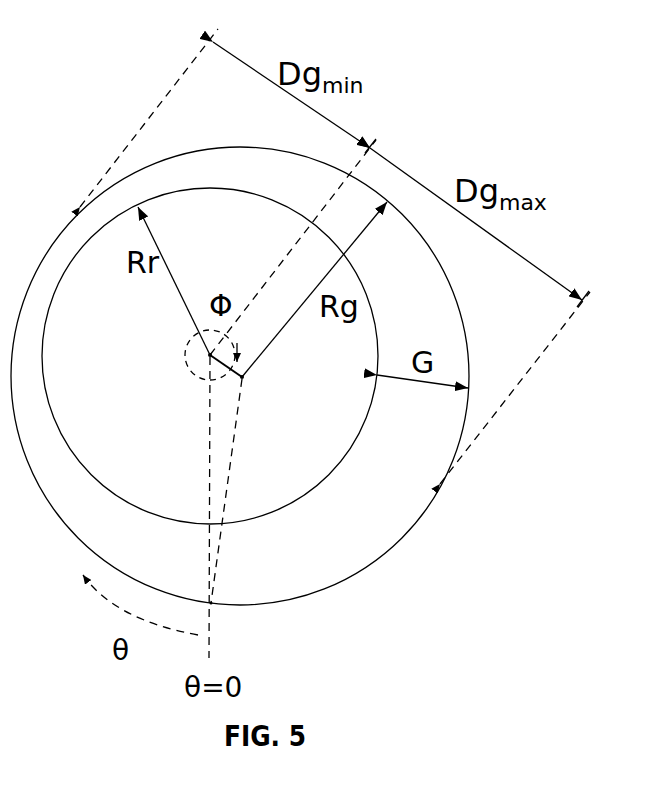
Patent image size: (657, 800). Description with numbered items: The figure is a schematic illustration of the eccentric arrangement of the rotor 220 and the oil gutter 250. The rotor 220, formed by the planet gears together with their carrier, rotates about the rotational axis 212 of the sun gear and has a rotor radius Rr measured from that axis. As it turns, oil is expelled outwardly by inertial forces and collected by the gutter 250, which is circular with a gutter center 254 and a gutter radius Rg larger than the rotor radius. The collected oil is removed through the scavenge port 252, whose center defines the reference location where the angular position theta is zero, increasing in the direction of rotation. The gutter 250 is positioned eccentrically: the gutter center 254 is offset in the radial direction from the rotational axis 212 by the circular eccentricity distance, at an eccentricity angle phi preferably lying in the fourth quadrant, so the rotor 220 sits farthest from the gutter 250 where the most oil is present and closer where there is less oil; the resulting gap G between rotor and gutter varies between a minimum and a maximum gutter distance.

The rotational axis 212 is at (205, 360).
The rotor 220 is at (262, 518).
The gutter 250 is at (361, 570).
The scavenge port 252 is at (215, 607).
The gutter center 254 is at (246, 380).